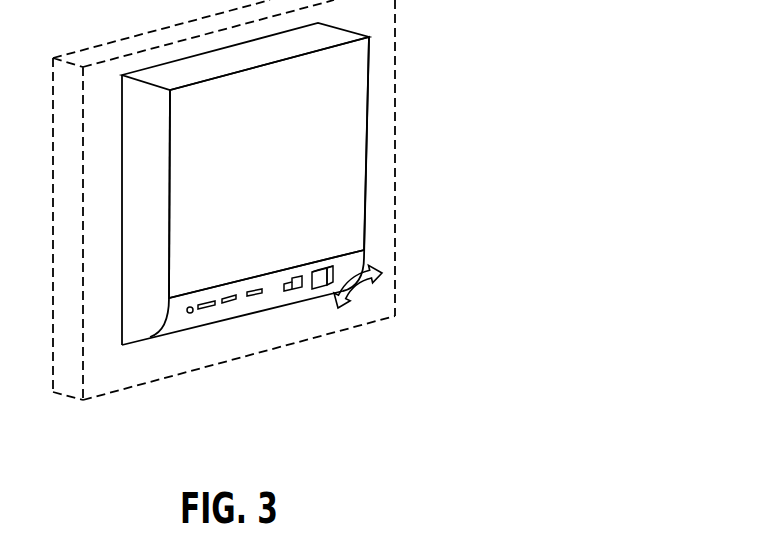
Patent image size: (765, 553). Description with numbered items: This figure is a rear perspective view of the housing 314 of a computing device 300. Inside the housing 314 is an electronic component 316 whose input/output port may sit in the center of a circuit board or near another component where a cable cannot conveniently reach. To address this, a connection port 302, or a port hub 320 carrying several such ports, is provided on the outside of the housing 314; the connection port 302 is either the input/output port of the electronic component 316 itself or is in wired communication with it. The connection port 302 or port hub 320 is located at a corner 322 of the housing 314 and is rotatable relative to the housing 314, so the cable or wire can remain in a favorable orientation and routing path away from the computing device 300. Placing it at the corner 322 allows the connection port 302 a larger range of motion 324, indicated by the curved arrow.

The computing device 300 is at (392, 233).
The connection port 302 is at (322, 288).
The housing 314 is at (318, 186).
The electronic component 316 is at (343, 211).
The port hub 320 is at (185, 320).
The corner 322 is at (133, 363).
The range of motion 324 is at (370, 305).